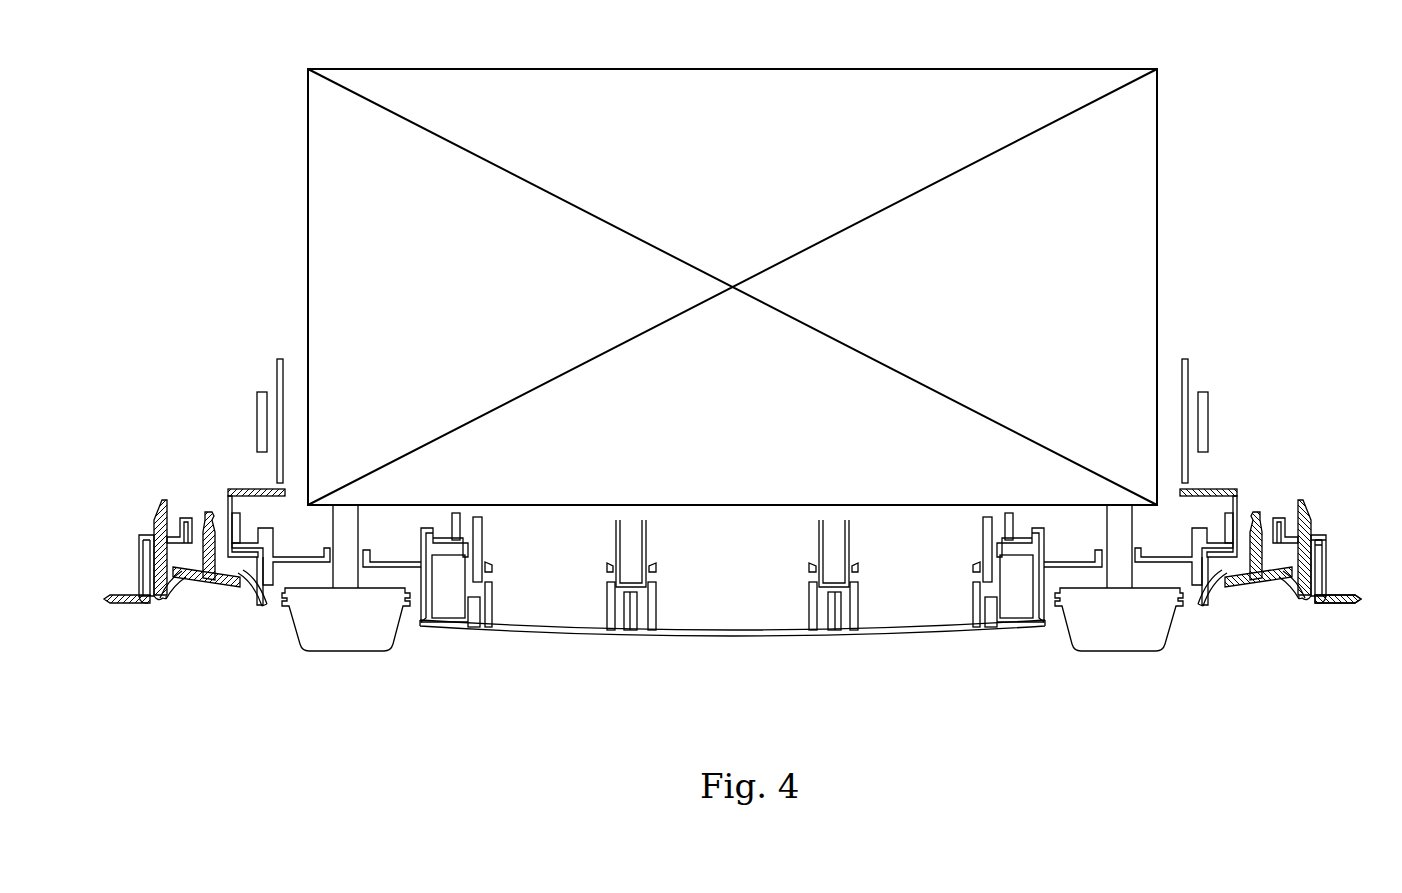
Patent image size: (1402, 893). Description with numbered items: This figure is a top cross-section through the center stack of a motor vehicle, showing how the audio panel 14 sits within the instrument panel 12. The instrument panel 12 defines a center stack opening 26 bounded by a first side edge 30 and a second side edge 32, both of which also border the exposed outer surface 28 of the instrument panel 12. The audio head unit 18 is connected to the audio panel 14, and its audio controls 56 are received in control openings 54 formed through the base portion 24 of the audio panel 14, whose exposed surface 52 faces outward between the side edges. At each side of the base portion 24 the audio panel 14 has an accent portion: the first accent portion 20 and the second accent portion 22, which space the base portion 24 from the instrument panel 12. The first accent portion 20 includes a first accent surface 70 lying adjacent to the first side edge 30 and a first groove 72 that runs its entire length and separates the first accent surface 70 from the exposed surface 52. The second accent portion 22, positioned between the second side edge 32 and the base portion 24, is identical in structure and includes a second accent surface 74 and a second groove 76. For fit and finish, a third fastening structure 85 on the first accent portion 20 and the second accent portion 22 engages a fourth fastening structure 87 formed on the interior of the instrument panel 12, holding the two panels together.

The instrument panel 12 is at (1357, 614).
The audio panel 14 is at (1316, 495).
The audio head unit 18 is at (1170, 232).
The first accent portion 20 is at (153, 614).
The second accent portion 22 is at (1319, 622).
The base portion 24 is at (232, 604).
The center stack opening 26 is at (280, 346).
The outer surface 28 is at (118, 604).
The first side edge 30 is at (148, 573).
The second side edge 32 is at (1317, 583).
The exposed surface 52 is at (207, 588).
The control openings 54 is at (245, 583).
The audio controls 56 is at (352, 653).
The first accent surface 70 is at (167, 606).
The first groove 72 is at (183, 590).
The second accent surface 74 is at (1293, 599).
The second groove 76 is at (1282, 592).
The third fastening structure 85 is at (158, 510).
The fourth fastening structure 87 is at (172, 518).